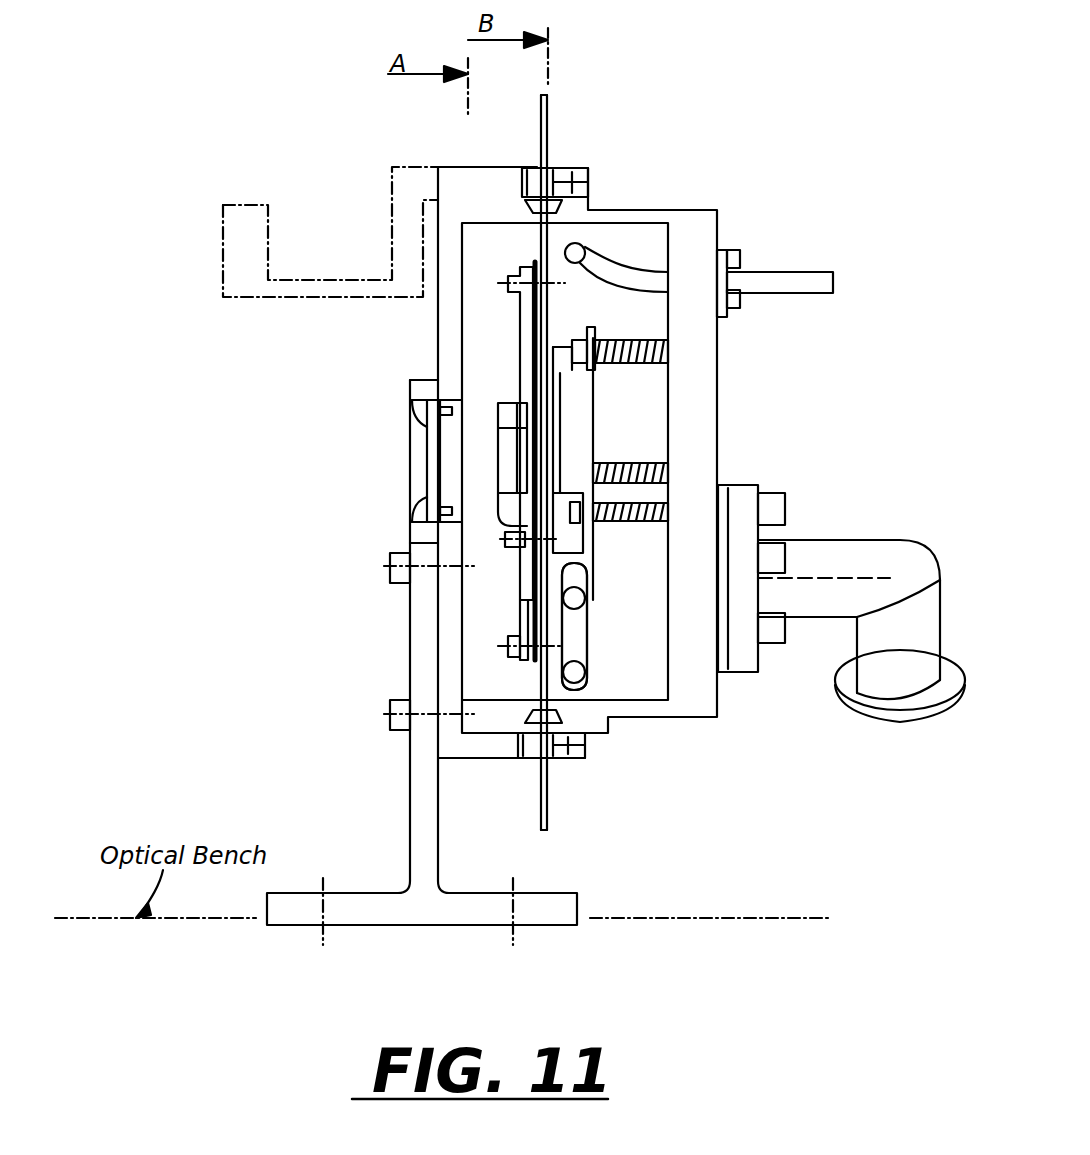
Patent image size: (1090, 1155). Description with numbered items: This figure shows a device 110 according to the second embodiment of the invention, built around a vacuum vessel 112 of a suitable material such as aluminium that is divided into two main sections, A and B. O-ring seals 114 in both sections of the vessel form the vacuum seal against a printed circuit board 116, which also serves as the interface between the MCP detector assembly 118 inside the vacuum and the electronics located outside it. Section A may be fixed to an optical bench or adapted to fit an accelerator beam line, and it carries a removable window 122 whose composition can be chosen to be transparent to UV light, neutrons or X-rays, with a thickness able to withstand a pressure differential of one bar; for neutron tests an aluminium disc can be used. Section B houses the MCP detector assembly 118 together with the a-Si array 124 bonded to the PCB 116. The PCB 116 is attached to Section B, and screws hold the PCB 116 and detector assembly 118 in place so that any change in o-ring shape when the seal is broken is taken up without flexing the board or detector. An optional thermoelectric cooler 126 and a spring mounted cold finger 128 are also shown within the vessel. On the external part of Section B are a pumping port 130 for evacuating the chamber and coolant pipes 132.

The device 110 is at (242, 358).
The vacuum vessel 112 is at (700, 408).
The O-ring seals 114 is at (567, 213).
The printed circuit board 116 is at (548, 132).
The MCP detector assembly 118 is at (473, 476).
The window 122 is at (400, 447).
The a-Si array 124 is at (553, 472).
The thermoelectric cooler 126 is at (582, 540).
The spring mounted cold finger 128 is at (587, 546).
The pumping port 130 is at (878, 568).
The coolant pipes 132 is at (792, 273).